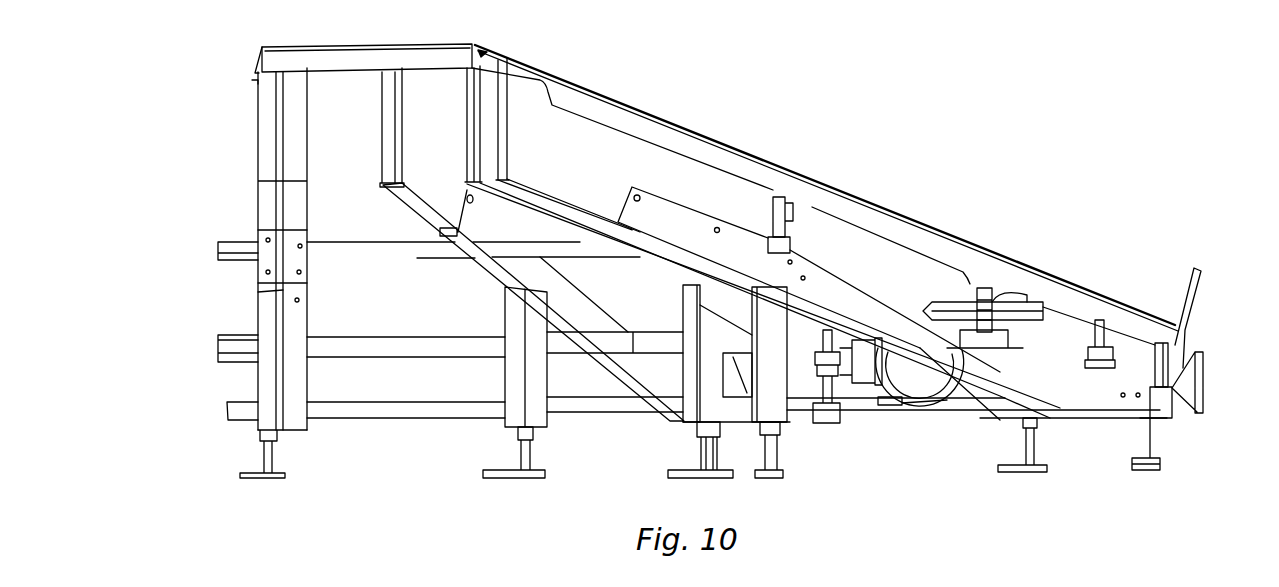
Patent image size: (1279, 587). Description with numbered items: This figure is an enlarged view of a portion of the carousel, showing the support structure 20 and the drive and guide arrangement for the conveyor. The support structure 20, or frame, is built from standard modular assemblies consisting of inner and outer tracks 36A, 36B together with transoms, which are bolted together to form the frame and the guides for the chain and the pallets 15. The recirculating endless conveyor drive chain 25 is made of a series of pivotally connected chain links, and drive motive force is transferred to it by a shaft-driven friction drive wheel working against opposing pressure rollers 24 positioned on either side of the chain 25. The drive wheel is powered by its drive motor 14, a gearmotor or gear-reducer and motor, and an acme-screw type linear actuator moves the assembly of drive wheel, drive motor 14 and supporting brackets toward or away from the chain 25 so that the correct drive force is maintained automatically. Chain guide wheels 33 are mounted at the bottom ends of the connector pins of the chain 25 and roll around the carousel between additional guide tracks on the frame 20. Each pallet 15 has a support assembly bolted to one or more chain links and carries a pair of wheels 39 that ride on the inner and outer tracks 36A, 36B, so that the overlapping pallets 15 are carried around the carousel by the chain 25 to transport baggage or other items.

The support structure 20 is at (744, 291).
The pallet 15 is at (910, 218).
The wheels 39 is at (780, 197).
The inner track 36A is at (790, 243).
The outer track 36B is at (1173, 390).
The conveyor drive chain 25 is at (986, 296).
The pressure rollers 24 is at (1038, 303).
The chain guide wheels 33 is at (985, 333).
The drive motor 14 is at (912, 382).